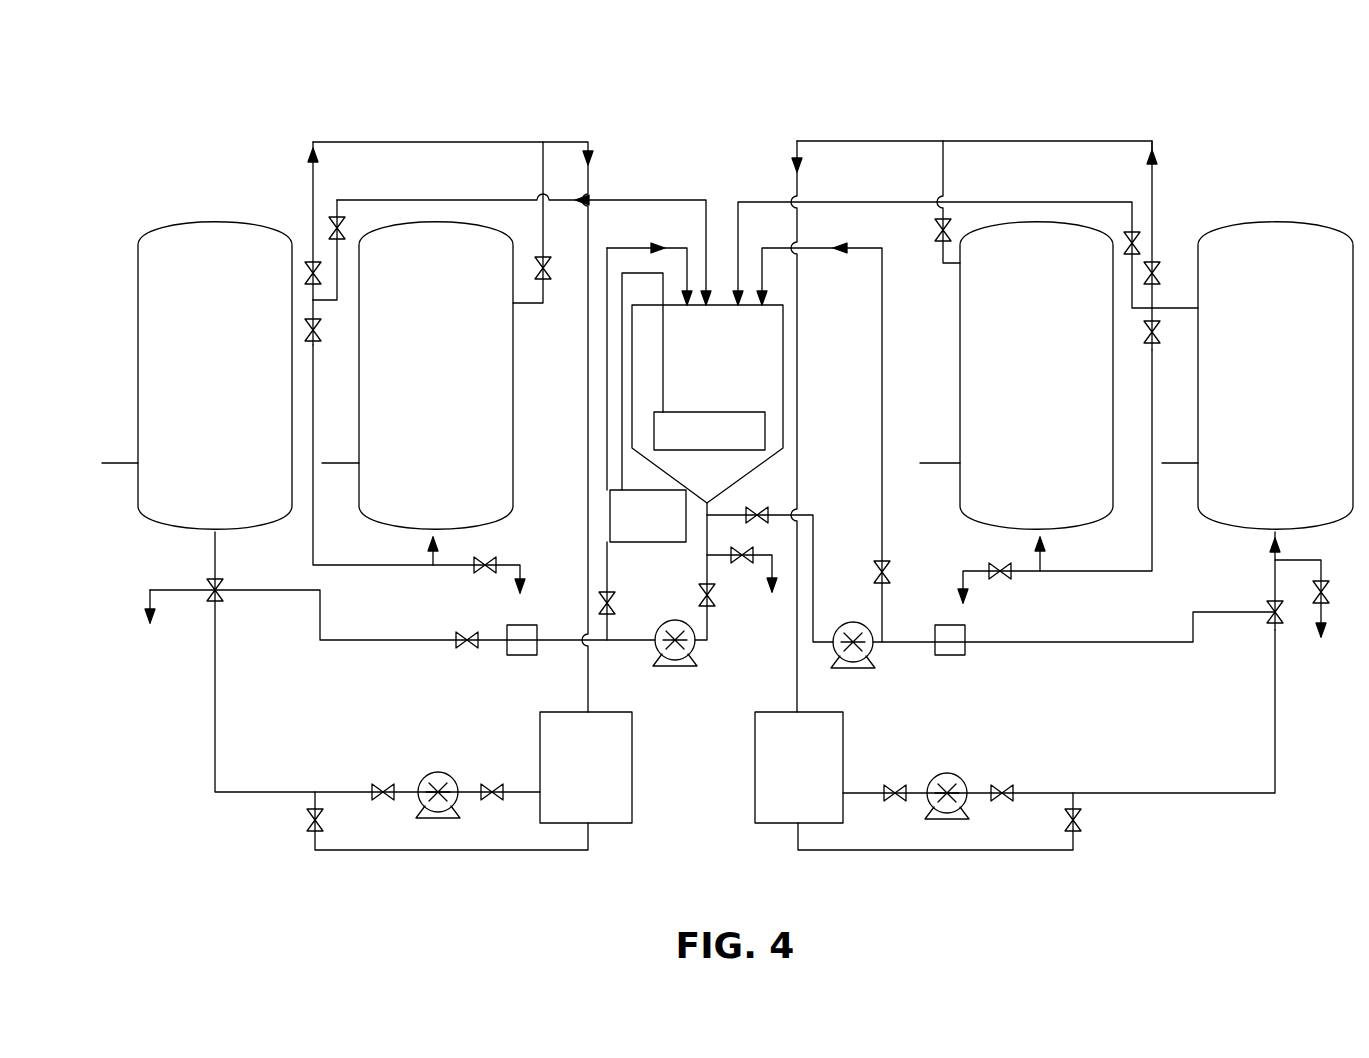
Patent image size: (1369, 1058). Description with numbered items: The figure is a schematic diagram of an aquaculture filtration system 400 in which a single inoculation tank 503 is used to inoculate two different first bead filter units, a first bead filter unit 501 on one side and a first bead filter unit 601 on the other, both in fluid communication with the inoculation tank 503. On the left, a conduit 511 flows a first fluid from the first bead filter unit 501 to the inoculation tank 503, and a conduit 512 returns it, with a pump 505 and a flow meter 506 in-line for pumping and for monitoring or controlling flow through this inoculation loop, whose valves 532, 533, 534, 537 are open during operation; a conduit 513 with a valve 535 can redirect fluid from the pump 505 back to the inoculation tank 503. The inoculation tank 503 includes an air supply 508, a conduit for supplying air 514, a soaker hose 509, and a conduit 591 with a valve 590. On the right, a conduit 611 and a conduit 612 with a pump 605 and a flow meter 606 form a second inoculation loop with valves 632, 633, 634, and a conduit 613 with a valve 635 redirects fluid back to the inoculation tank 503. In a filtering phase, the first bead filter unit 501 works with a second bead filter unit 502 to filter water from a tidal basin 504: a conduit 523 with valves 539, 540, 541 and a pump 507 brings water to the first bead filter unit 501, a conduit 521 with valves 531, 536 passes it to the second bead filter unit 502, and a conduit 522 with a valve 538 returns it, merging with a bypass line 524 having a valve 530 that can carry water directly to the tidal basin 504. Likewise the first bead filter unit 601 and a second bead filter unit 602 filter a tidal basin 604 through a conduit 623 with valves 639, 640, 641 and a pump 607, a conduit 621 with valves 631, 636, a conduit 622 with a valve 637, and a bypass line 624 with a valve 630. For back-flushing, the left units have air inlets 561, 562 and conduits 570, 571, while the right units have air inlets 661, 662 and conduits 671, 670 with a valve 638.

The aquaculture filtration system 400 is at (1188, 104).
The first bead filter unit 501 is at (215, 376).
The second bead filter unit 502 is at (436, 376).
The inoculation tank 503 is at (707, 404).
The tidal basin 504 is at (586, 767).
The pump 505 is at (670, 670).
The flow meter 506 is at (522, 658).
The pump 507 is at (438, 772).
The air supply 508 is at (648, 516).
The soaker hose 509 is at (709, 431).
The conduit 511 is at (455, 198).
The conduit 512 is at (378, 642).
The conduit 513 is at (588, 420).
The conduit for supplying air 514 is at (665, 360).
The conduit 521 is at (315, 548).
The conduit 522 is at (540, 250).
The conduit 523 is at (218, 740).
The bypass line 524 is at (412, 140).
The valve 530 is at (305, 268).
The valve 531 is at (305, 332).
The valve 532 is at (225, 590).
The valve 533 is at (330, 226).
The valve 534 is at (715, 596).
The valve 535 is at (615, 602).
The valve 536 is at (482, 575).
The valve 537 is at (465, 645).
The valve 538 is at (550, 272).
The valve 539 is at (500, 780).
The valve 540 is at (385, 780).
The valve 541 is at (308, 822).
The air inlet 561 is at (122, 462).
The air inlet 562 is at (343, 462).
The conduit 570 is at (165, 588).
The conduit 571 is at (525, 566).
The valve 590 is at (742, 553).
The conduit 591 is at (770, 568).
The first bead filter unit 601 is at (1275, 376).
The second bead filter unit 602 is at (1036, 376).
The tidal basin 604 is at (799, 767).
The pump 605 is at (855, 668).
The flow meter 606 is at (955, 656).
The pump 607 is at (948, 772).
The conduit 611 is at (1065, 200).
The conduit 612 is at (1080, 644).
The conduit 613 is at (884, 508).
The conduit 621 is at (1155, 562).
The conduit 622 is at (940, 195).
The conduit 623 is at (1278, 760).
The bypass line 624 is at (1025, 141).
The valve 630 is at (1160, 272).
The valve 631 is at (1148, 335).
The valve 632 is at (1285, 612).
The valve 633 is at (1125, 243).
The valve 634 is at (757, 510).
The valve 635 is at (890, 572).
The valve 636 is at (1000, 562).
The valve 637 is at (935, 232).
The valve 638 is at (1330, 592).
The valve 639 is at (892, 782).
The valve 640 is at (1010, 782).
The valve 641 is at (1080, 822).
The air inlet 661 is at (940, 462).
The air inlet 662 is at (1180, 462).
The conduit 670 is at (1300, 558).
The conduit 671 is at (965, 583).